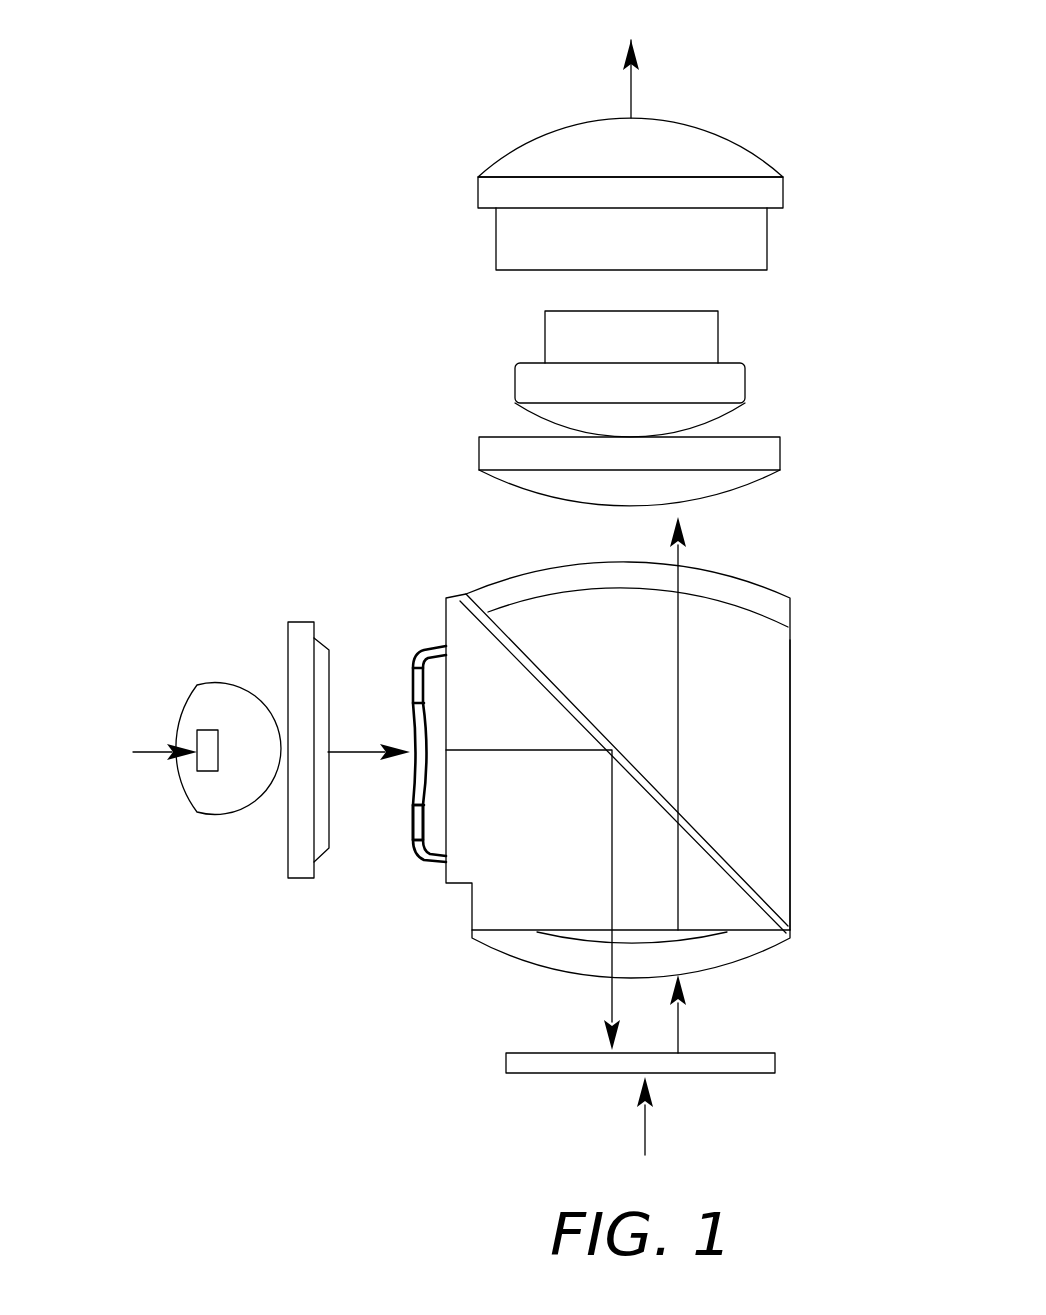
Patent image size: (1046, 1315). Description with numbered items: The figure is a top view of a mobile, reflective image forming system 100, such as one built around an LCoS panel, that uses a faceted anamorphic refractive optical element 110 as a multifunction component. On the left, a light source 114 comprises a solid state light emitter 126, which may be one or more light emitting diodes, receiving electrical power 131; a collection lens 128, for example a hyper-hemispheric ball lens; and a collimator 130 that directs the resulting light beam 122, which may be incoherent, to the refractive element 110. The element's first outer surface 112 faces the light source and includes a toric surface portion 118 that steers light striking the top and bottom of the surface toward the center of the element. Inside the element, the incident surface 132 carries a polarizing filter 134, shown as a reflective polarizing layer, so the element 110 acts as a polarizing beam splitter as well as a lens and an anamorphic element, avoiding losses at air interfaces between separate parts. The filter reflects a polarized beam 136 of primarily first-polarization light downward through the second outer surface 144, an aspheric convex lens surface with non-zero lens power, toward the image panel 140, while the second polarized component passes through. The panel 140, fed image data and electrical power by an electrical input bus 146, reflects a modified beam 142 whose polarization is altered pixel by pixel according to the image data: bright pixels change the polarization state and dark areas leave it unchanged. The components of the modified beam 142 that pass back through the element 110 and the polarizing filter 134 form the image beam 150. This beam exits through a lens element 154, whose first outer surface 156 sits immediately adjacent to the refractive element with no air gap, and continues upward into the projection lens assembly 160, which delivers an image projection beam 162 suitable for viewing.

The image forming system 100 is at (757, 65).
The refractive optical element 110 is at (446, 607).
The first outer surface 112 is at (418, 658).
The light source 114 is at (337, 606).
The toric surface portion 118 is at (412, 796).
The light beam 122 is at (364, 740).
The solid state light emitter 126 is at (195, 760).
The collection lens 128 is at (222, 812).
The collimator 130 is at (301, 878).
The electrical power 131 is at (157, 747).
The incident surface 132 is at (736, 893).
The polarizing filter 134 is at (732, 853).
The polarized beam 136 is at (612, 830).
The image panel 140 is at (775, 1065).
The modified beam 142 is at (678, 1023).
The second outer surface 144 is at (750, 953).
The electrical input bus 146 is at (645, 1127).
The image beam 150 is at (683, 553).
The lens element 154 is at (768, 657).
The first outer surface of lens element 156 is at (758, 582).
The projection lens assembly 160 is at (806, 115).
The image projection beam 162 is at (631, 90).